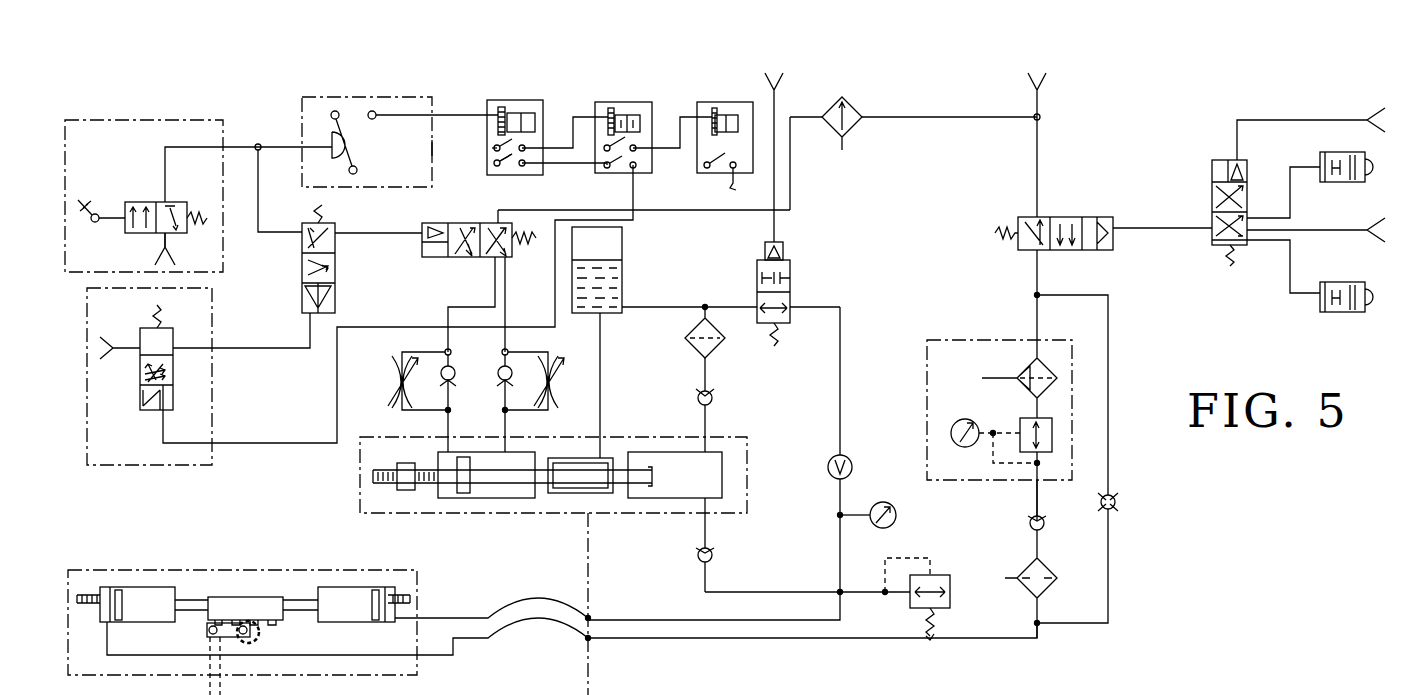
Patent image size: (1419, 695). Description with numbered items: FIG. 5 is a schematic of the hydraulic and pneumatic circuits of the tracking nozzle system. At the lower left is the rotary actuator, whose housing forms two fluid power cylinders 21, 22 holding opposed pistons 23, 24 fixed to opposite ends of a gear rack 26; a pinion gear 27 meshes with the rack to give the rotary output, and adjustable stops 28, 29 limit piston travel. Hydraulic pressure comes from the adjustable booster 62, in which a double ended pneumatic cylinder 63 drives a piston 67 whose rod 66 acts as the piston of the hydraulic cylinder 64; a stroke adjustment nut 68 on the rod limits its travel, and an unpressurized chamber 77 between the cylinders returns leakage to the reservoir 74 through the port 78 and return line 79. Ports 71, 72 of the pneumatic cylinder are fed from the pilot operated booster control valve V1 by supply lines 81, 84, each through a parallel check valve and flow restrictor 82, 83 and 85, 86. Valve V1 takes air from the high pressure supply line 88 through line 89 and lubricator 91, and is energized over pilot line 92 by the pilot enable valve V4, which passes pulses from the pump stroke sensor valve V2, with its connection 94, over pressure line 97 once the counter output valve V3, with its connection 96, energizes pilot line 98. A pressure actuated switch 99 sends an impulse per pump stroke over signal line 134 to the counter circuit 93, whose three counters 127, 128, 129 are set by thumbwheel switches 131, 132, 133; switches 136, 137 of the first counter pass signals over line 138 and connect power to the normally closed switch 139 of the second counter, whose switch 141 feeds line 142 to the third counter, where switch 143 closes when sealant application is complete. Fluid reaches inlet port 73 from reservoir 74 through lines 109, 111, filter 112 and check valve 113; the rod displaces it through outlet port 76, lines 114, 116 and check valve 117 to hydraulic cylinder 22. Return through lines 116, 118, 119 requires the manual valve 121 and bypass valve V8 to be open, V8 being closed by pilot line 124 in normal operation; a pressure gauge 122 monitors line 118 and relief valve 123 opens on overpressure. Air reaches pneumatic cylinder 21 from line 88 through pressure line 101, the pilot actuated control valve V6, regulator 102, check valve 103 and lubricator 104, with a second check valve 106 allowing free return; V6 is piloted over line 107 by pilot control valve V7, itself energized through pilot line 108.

The pump stroke sensor valve V2 is at (158, 201).
The exhaust of valve V2 94 is at (170, 240).
The pressure line 97 is at (262, 203).
The counter circuit 93 is at (416, 92).
The signal line 134 is at (444, 113).
The pressure actuated switch 99 is at (433, 150).
The first counter 127 is at (514, 122).
The thumbwheel switch 131 is at (520, 113).
The normally open switch 136 is at (494, 150).
The second switch 137 is at (505, 175).
The signal line 138 is at (573, 115).
The switch 141 is at (600, 160).
The second counter 128 is at (632, 121).
The thumbwheel switch 132 is at (630, 115).
The normally closed switch 139 is at (630, 170).
The signal line 142 is at (680, 115).
The third counter 129 is at (703, 131).
The thumbwheel switch 133 is at (725, 138).
The normally open switch 143 is at (730, 172).
The pilot line 124 is at (786, 216).
The pressure supply line 89 is at (792, 110).
The lubricator 91 is at (860, 104).
The high pressure air supply line 88 is at (1043, 112).
The rotary actuator control valve V6 is at (1082, 216).
The pilot line 107 is at (1155, 227).
The pilot control valve V7 is at (1214, 190).
The pilot line 108 is at (1320, 119).
The pilot control valve V4 is at (338, 272).
The pilot line 92 is at (373, 231).
The counter output valve V3 is at (175, 398).
The inlet 96 is at (112, 352).
The pilot line 98 is at (272, 352).
The booster control valve V1 is at (478, 222).
The pressure supply line 81 is at (493, 290).
The pressure supply line 84 is at (507, 294).
The check valve 82 is at (465, 351).
The flow restrictor 83 is at (394, 372).
The check valve 85 is at (486, 378).
The flow resistor 86 is at (552, 365).
The booster 62 is at (532, 427).
The pneumatic cylinder 63 is at (520, 499).
The piston 67 is at (465, 499).
The stroke adjustment nut 68 is at (372, 466).
The first port 71 is at (445, 440).
The second port 72 is at (503, 440).
The unpressurized chamber 77 is at (577, 457).
The port 78 is at (603, 440).
The return line 79 is at (603, 388).
The hydraulic cylinder 64 is at (660, 499).
The rod 66 is at (655, 476).
The hydraulic fluid reservoir 74 is at (625, 290).
The hydraulic line 109 is at (662, 309).
The hydraulic line 119 is at (727, 304).
The tracking nozzle bypass valve V8 is at (792, 273).
The filter 112 is at (723, 352).
The check valve 113 is at (714, 397).
The hydraulic line 111 is at (710, 418).
The inlet port 73 is at (703, 428).
The hydraulic line 118 is at (843, 400).
The manual valve 121 is at (853, 466).
The pressure gauge 122 is at (897, 512).
The outlet port 76 is at (708, 515).
The check valve 117 is at (692, 558).
The hydraulic line 114 is at (783, 590).
The hydraulic line 116 is at (660, 621).
The pressure relief valve 123 is at (948, 600).
The pressure line 101 is at (872, 641).
The pressure regulator 102 is at (975, 338).
The second check valve 106 is at (1118, 505).
The check valve 103 is at (1022, 525).
The lubricator 104 is at (1044, 566).
The fluid power cylinder 21 is at (158, 585).
The piston 23 is at (122, 622).
The adjustable stop 28 is at (88, 590).
The gear rack 26 is at (238, 595).
The pinion gear 27 is at (270, 635).
The fluid power cylinder 22 is at (335, 585).
The piston 24 is at (377, 622).
The adjustable stop 29 is at (412, 592).